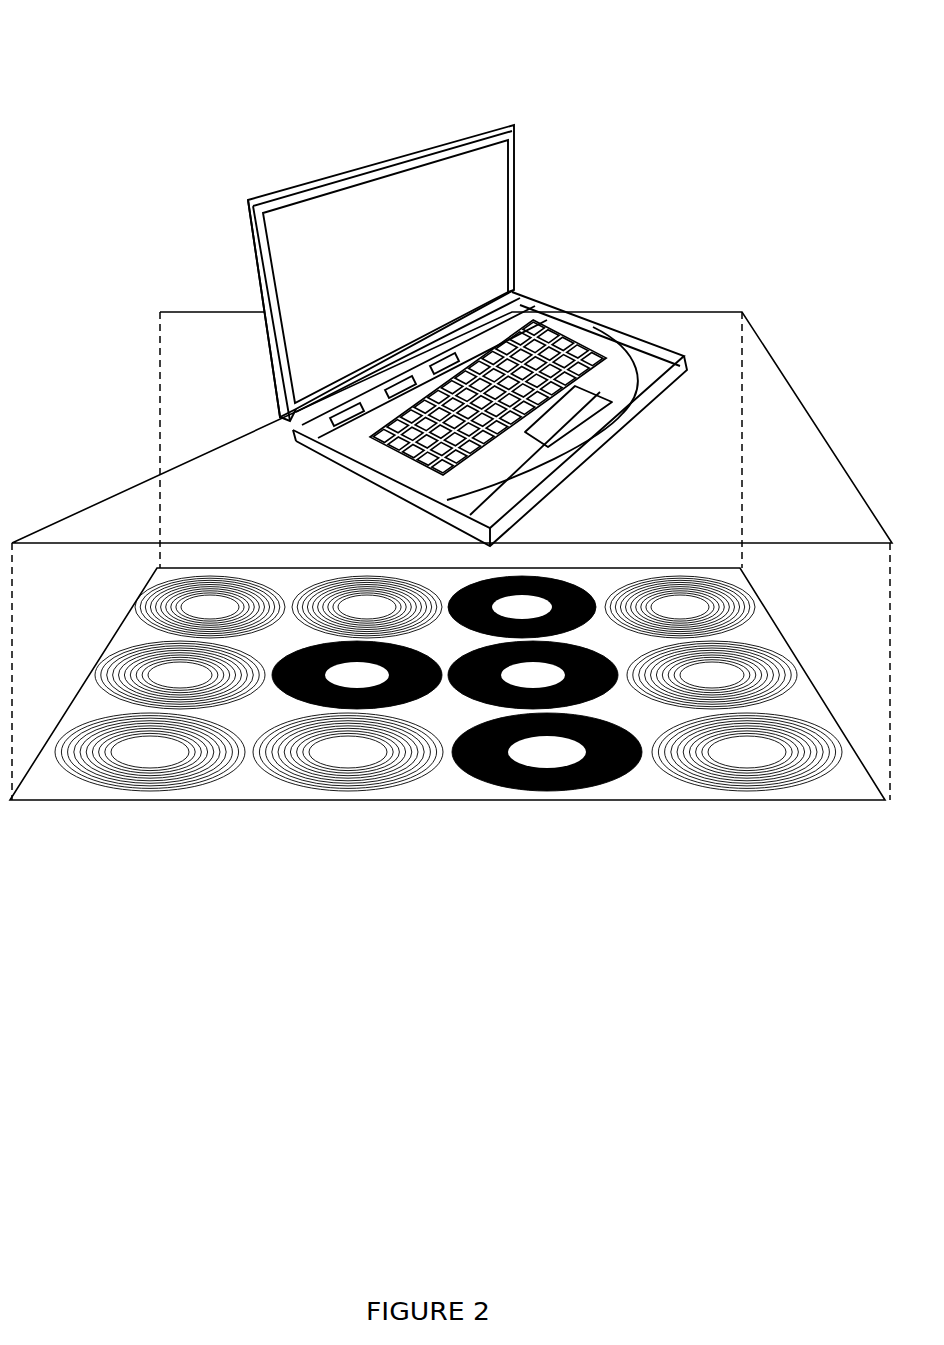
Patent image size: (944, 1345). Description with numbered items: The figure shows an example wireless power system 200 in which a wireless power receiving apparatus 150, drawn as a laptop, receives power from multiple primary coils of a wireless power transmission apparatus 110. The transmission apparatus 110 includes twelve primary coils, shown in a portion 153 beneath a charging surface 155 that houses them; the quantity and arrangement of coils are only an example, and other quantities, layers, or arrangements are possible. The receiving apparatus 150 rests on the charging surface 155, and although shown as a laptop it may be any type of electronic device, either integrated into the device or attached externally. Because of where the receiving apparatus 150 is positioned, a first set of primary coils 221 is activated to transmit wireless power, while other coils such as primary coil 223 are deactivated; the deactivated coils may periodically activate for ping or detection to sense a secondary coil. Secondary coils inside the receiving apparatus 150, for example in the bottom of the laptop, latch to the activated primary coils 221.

The wireless power system 200 is at (118, 12).
The wireless power transmission apparatus 110 is at (65, 334).
The wireless power receiving apparatus 150 is at (503, 125).
The charging surface 155 is at (789, 386).
The portion 153 is at (783, 636).
The first set of primary coils 221 is at (533, 790).
The primary coil 223 is at (743, 790).